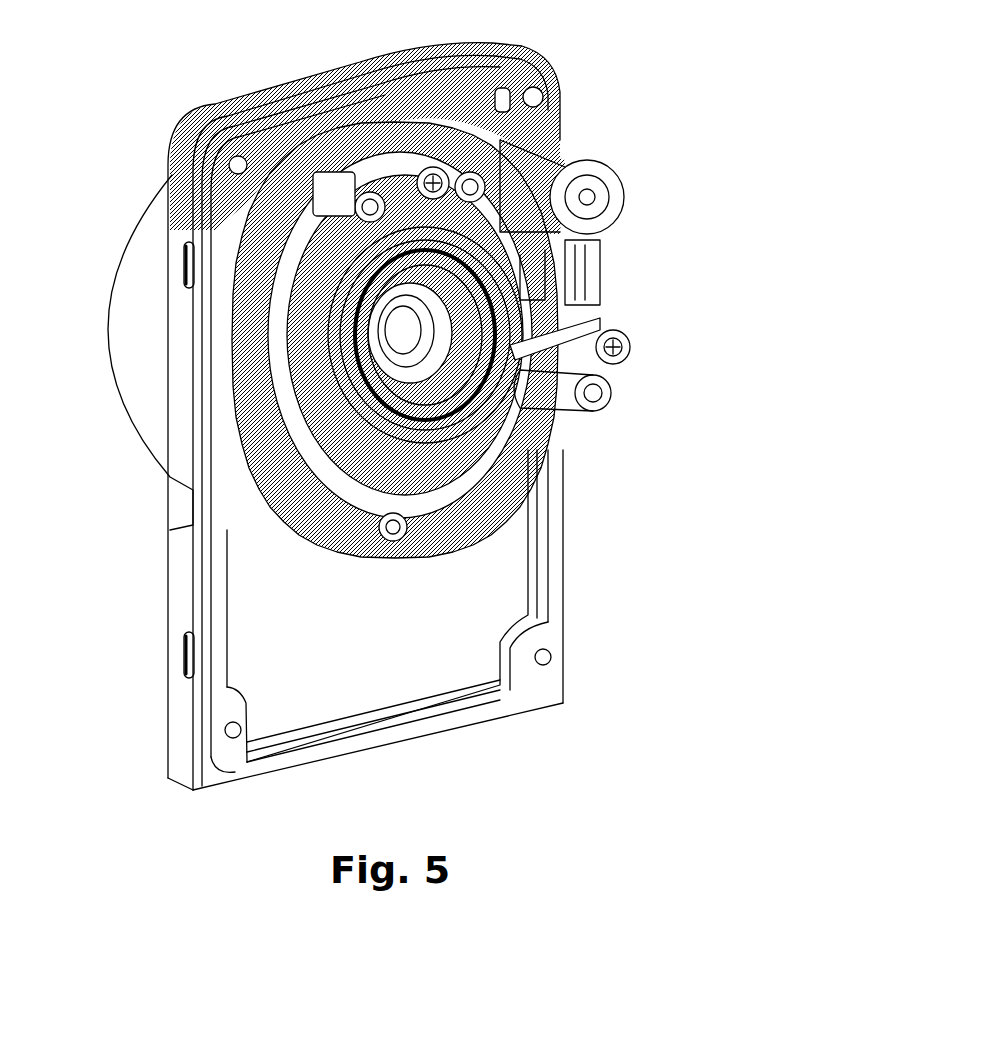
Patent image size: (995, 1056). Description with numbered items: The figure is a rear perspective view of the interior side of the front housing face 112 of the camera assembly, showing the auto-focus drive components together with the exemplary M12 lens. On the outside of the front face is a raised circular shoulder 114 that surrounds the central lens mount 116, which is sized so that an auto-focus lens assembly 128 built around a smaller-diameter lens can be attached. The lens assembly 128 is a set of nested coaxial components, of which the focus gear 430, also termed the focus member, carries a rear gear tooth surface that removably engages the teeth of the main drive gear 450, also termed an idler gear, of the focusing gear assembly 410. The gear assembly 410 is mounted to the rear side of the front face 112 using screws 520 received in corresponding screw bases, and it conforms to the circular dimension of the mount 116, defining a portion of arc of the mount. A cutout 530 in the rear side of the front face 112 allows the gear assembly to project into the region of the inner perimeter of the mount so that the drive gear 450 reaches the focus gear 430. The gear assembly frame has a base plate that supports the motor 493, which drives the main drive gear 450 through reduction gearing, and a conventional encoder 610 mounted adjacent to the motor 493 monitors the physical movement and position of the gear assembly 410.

The front housing face 112 is at (235, 760).
The raised circular shoulder 114 is at (145, 420).
The lens mount 116 is at (370, 413).
The lens assembly 128 is at (384, 342).
The focusing gear assembly 410 is at (523, 260).
The focus gear 430 is at (457, 237).
The drive gear 450 is at (510, 340).
The motor 493 is at (570, 150).
The screws 520 is at (433, 168).
The cutout 530 is at (500, 372).
The encoder 610 is at (597, 262).